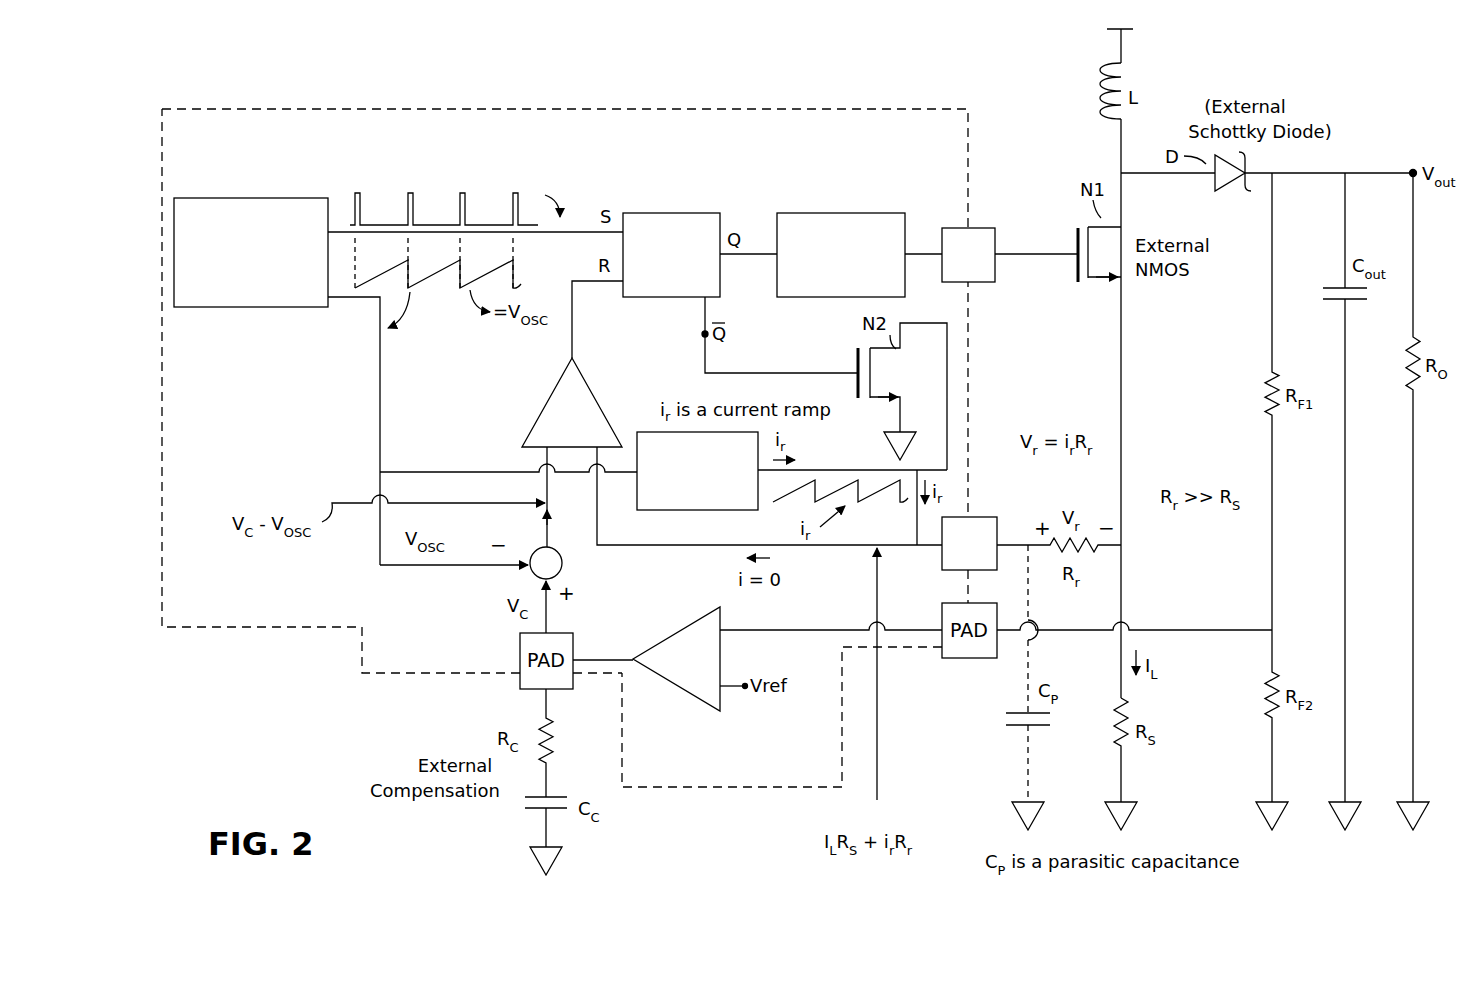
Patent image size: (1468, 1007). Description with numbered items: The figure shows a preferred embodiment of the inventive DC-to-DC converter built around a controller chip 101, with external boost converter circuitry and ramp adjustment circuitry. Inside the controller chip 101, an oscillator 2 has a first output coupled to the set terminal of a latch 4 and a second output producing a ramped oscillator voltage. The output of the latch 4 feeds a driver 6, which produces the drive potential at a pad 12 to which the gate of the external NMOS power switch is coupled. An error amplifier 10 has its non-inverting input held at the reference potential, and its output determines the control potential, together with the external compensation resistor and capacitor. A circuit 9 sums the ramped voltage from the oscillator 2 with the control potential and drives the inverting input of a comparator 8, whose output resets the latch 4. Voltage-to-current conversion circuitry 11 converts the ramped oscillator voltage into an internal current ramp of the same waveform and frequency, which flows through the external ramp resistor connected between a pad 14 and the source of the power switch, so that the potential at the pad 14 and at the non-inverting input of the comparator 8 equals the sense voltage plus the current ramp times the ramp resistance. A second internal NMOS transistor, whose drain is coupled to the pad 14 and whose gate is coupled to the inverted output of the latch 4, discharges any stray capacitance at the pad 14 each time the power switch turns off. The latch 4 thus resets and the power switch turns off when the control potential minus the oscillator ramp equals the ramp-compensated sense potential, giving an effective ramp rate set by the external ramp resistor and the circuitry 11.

The controller chip 101 is at (338, 108).
The oscillator 2 is at (264, 197).
The latch 4 is at (678, 212).
The driver 6 is at (845, 212).
The comparator 8 is at (612, 422).
The circuit 9 is at (560, 546).
The error amplifier 10 is at (678, 628).
The voltage-to-current conversion circuitry 11 is at (663, 511).
The pad 12 is at (1000, 240).
The pad 14 is at (978, 517).